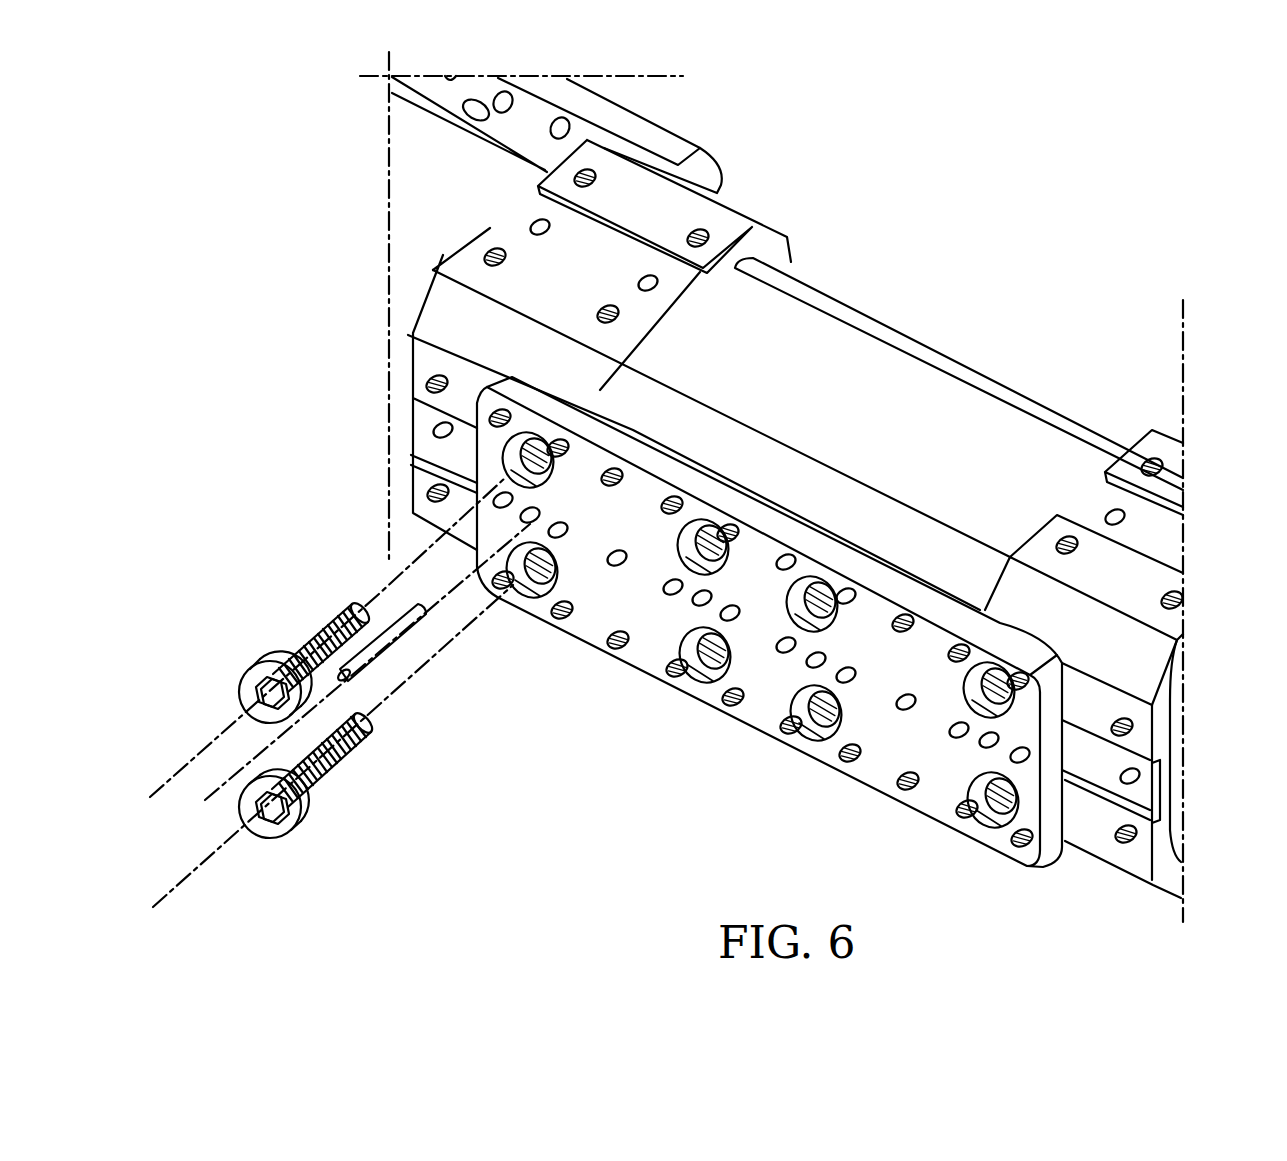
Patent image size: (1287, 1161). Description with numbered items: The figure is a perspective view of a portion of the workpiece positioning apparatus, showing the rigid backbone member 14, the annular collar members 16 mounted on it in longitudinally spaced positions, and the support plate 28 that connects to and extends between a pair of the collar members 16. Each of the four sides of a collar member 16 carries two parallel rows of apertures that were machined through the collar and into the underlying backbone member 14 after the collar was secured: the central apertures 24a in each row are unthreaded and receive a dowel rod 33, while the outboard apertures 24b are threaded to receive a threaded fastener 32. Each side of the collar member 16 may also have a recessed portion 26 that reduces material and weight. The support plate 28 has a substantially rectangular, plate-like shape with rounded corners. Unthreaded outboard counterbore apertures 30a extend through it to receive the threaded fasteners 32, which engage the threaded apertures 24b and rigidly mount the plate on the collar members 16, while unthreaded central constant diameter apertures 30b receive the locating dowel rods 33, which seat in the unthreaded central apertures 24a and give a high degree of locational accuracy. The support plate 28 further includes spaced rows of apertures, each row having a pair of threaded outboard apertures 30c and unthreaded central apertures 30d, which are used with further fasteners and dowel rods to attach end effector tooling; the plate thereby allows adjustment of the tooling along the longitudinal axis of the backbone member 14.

The backbone member 14 is at (879, 352).
The collar member 16 is at (738, 228).
The central aperture 24a is at (530, 225).
The outboard aperture 24b is at (486, 255).
The recessed portion 26 is at (668, 298).
The support plate 28 is at (693, 606).
The outboard counterbore aperture 30a is at (525, 445).
The central constant diameter aperture 30b is at (492, 497).
The threaded outboard aperture 30c is at (606, 476).
The unthreaded central aperture 30d is at (620, 548).
The threaded fastener 32 is at (318, 640).
The dowel rod 33 is at (388, 660).